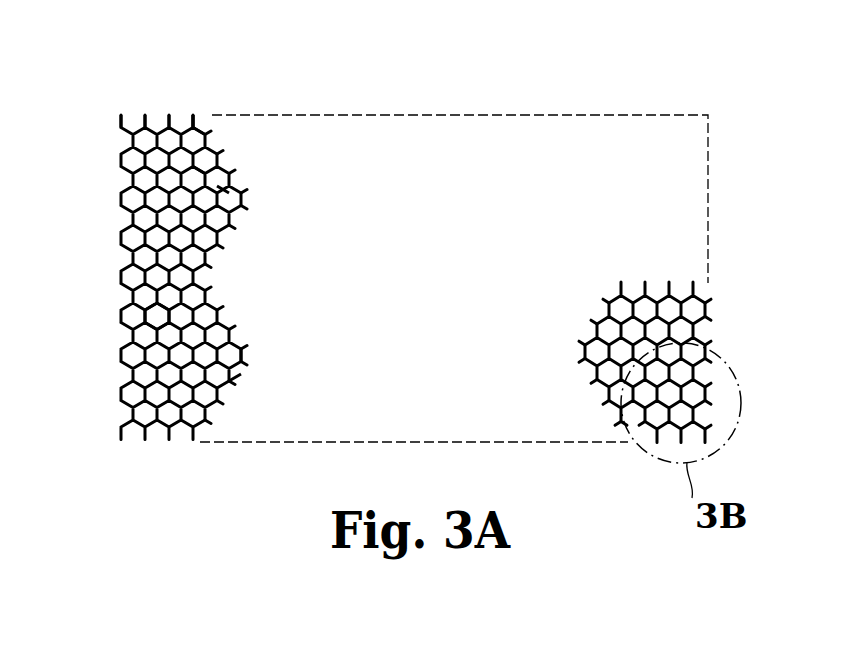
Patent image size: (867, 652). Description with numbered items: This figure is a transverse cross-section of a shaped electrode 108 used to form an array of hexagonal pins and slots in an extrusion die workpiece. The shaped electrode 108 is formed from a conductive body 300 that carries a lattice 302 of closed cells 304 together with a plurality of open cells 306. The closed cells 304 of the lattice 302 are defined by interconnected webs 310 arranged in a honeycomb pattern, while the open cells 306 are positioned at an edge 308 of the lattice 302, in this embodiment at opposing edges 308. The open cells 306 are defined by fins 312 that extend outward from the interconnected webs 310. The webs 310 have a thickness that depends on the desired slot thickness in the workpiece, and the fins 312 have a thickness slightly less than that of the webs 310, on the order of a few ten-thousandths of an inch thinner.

The shaped electrode 108 is at (160, 78).
The conductive body 300 is at (115, 165).
The lattice 302 is at (157, 318).
The closed cells 304 is at (220, 182).
The open cells 306 is at (130, 113).
The edge 308 is at (420, 113).
The interconnected webs 310 is at (233, 392).
The fins 312 is at (201, 134).